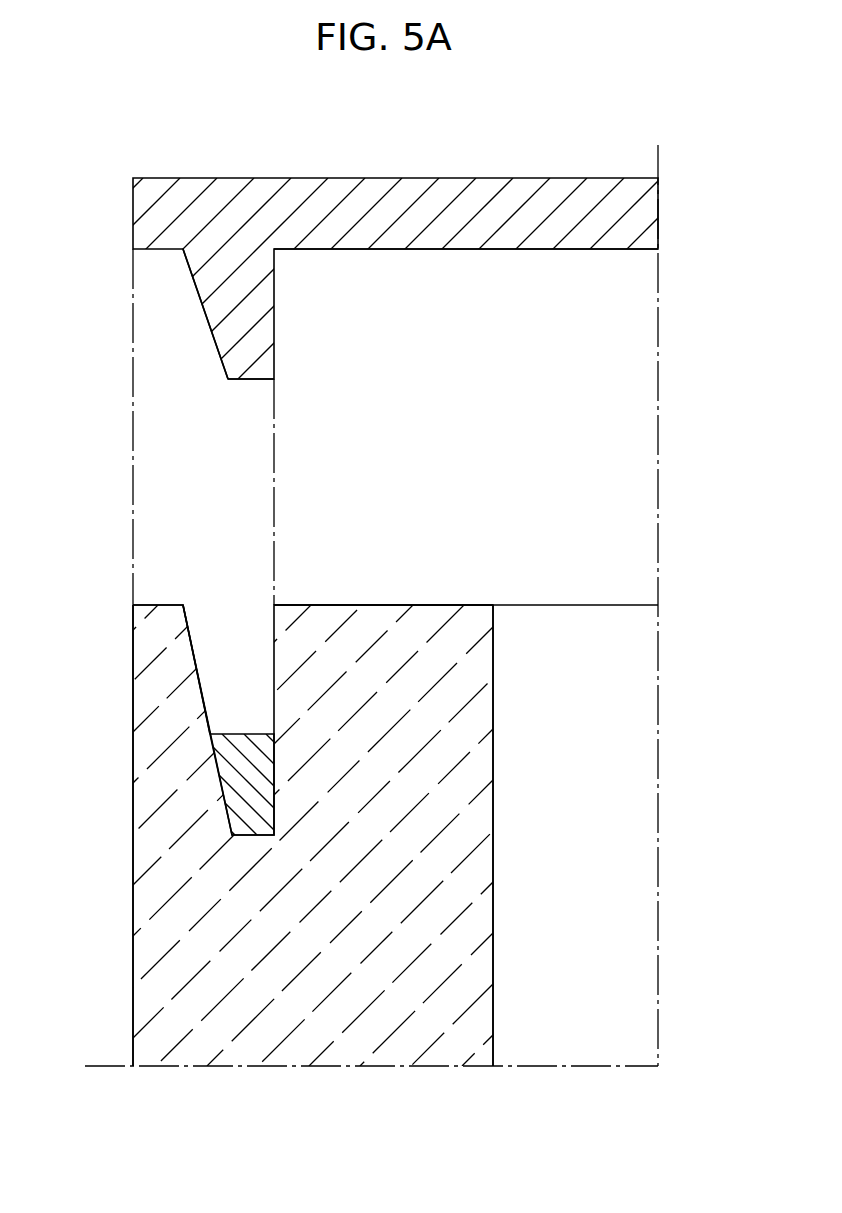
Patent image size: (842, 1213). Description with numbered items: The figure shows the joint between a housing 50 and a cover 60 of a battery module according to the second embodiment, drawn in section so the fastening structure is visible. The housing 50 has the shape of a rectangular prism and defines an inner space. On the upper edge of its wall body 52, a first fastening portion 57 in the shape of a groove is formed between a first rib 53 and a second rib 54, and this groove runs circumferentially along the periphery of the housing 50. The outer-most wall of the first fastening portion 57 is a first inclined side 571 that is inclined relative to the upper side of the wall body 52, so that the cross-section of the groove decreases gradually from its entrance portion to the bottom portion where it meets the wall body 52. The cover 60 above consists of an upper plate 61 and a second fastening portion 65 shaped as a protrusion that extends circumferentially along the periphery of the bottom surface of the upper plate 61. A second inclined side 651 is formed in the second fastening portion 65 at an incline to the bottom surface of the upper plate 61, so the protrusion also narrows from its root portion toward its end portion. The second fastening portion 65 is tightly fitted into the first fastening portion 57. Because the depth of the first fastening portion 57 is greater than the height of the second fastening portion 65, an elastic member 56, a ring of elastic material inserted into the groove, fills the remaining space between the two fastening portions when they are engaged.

The cover 60 is at (108, 158).
The upper plate 61 is at (603, 251).
The second fastening portion 65 is at (213, 305).
The second inclined side 651 is at (208, 339).
The housing 50 is at (110, 928).
The wall body 52 is at (472, 1025).
The first rib 53 is at (148, 775).
The second rib 54 is at (473, 726).
The elastic member 56 is at (234, 795).
The first fastening portion 57 is at (222, 676).
The first inclined side 571 is at (193, 638).